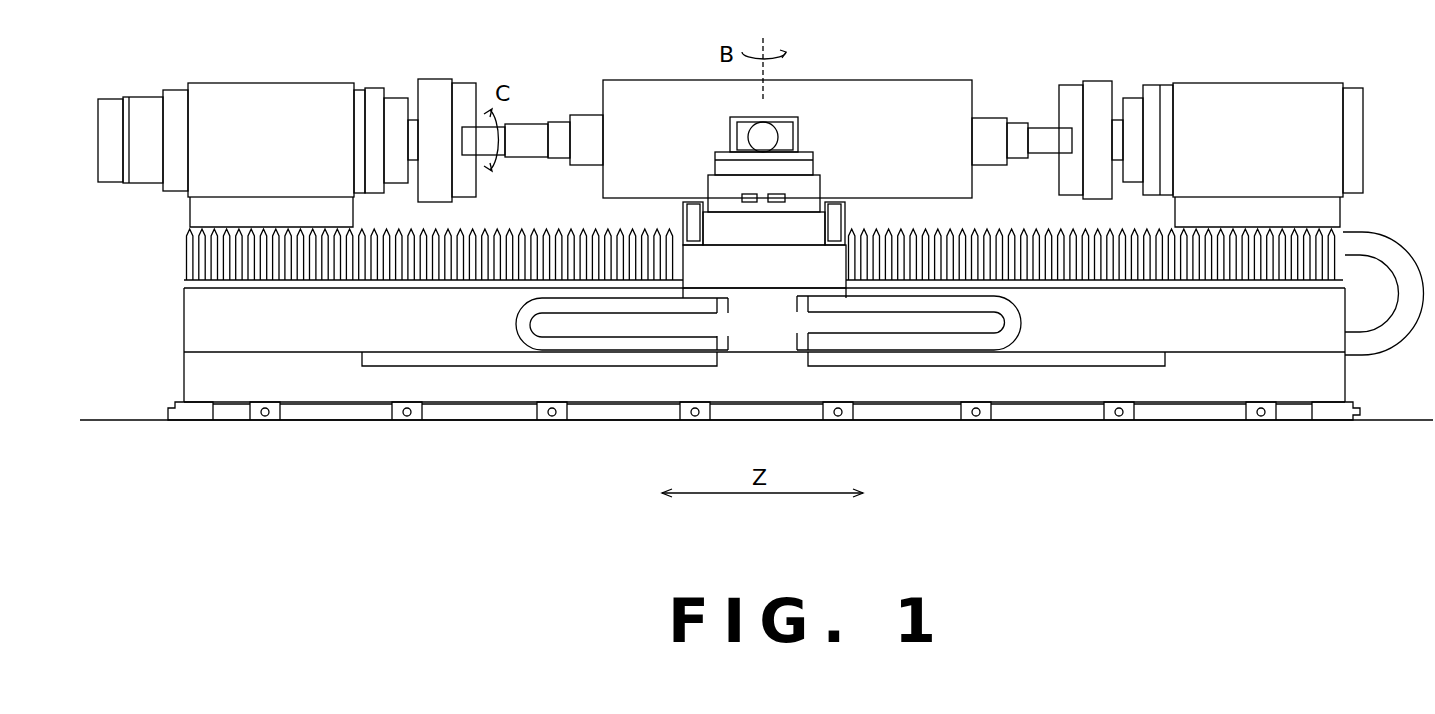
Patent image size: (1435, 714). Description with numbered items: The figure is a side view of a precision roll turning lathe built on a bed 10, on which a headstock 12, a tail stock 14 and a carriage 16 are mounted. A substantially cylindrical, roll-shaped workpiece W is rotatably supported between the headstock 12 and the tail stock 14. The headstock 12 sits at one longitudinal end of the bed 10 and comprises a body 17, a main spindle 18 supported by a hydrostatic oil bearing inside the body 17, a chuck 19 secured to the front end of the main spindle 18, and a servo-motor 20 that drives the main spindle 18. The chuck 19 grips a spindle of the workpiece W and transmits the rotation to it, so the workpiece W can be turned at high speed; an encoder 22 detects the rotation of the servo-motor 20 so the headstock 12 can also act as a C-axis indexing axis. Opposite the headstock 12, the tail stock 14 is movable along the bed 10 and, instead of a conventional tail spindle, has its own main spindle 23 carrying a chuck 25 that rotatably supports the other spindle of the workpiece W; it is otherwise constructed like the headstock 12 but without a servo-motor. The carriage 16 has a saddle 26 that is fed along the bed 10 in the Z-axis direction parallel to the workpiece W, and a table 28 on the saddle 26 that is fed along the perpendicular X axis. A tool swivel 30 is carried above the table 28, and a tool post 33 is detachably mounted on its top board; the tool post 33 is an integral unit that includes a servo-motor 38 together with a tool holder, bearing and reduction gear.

The bed 10 is at (207, 322).
The headstock 12 is at (250, 78).
The tail stock 14 is at (1252, 78).
The carriage 16 is at (835, 162).
The body 17 is at (218, 117).
The main spindle 18 is at (395, 107).
The chuck 19 is at (438, 95).
The servo-motor 20 is at (148, 167).
The encoder 22 is at (113, 120).
The main spindle 23 is at (1130, 98).
The chuck 25 is at (1097, 95).
The saddle 26 is at (771, 270).
The table 28 is at (800, 193).
The tool swivel 30 is at (723, 167).
The tool post 33 is at (790, 110).
The servo-motor 38 is at (758, 137).
The workpiece W is at (878, 97).